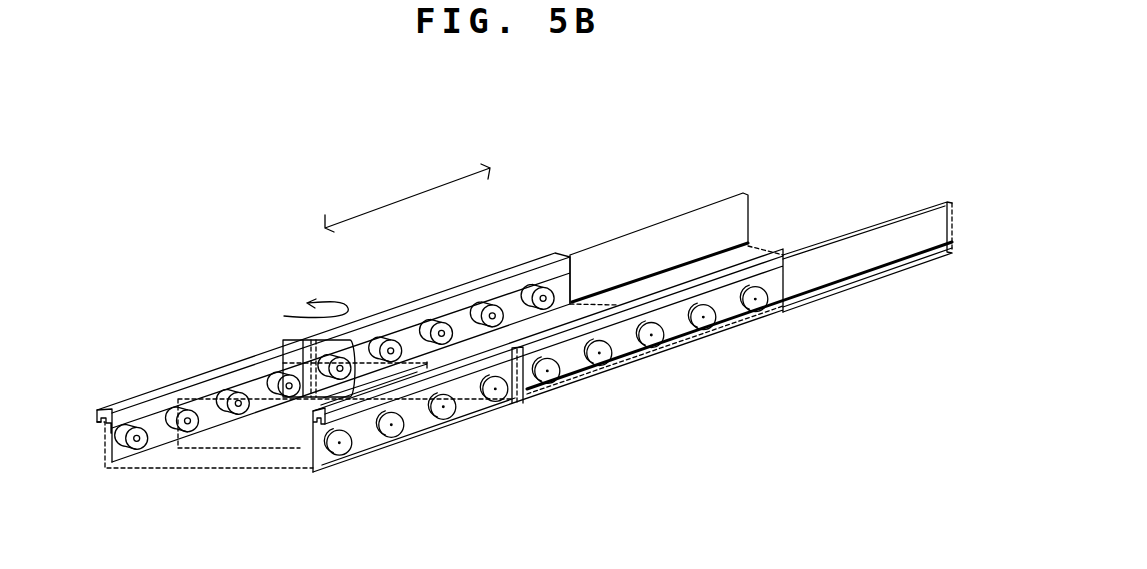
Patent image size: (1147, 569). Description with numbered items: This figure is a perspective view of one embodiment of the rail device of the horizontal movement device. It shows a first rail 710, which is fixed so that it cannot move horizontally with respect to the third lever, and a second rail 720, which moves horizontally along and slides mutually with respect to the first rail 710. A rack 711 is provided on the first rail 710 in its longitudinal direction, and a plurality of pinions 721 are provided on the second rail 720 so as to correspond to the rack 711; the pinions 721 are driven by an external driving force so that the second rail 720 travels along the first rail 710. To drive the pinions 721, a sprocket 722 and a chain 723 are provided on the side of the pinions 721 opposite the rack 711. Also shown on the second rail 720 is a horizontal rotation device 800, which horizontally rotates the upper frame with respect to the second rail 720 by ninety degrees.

The first rail 710 is at (890, 271).
The rack 711 is at (836, 283).
The second rail 720 is at (780, 305).
The pinions 721 is at (445, 420).
The sprocket 722 is at (391, 340).
The chain 723 is at (465, 306).
The horizontal rotation device 800 is at (306, 456).